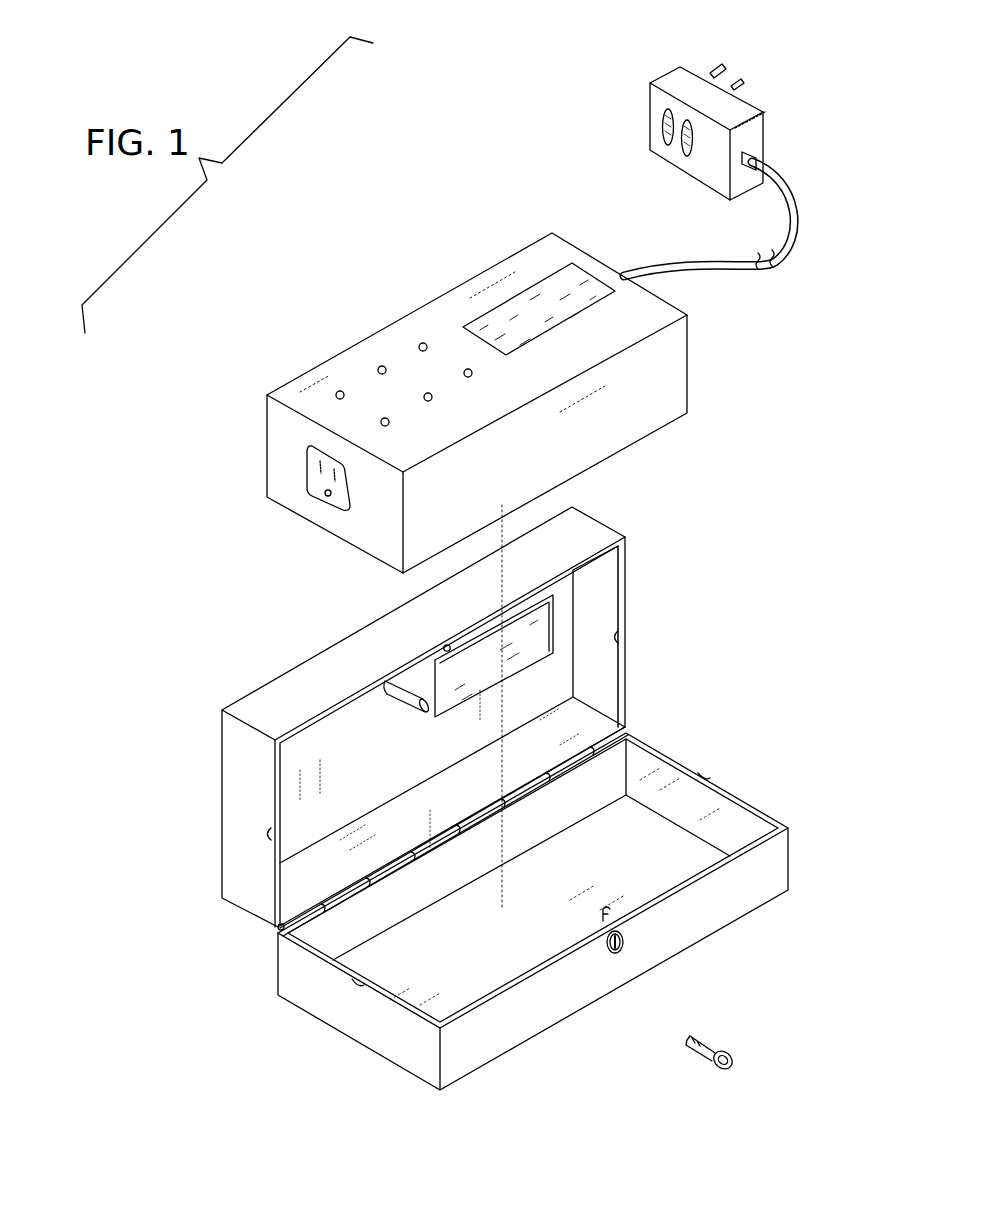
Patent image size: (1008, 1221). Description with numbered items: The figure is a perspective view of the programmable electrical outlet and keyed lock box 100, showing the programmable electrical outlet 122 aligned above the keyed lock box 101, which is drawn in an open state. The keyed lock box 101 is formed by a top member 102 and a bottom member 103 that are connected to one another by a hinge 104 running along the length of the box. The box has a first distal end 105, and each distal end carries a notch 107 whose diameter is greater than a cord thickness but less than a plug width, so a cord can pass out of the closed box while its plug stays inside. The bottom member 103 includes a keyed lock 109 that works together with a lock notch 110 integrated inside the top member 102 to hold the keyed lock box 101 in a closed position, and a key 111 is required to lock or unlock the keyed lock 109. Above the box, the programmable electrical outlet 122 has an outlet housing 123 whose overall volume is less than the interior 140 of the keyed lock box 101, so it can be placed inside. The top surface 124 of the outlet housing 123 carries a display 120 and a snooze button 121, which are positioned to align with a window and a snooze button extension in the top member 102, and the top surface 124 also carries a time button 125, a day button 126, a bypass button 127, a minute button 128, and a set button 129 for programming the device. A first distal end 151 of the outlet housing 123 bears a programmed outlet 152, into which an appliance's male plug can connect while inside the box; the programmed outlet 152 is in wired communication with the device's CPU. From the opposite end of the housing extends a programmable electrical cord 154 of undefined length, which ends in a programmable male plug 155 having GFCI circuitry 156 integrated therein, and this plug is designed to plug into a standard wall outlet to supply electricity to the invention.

The programmable electrical outlet and keyed lock box 100 is at (385, 193).
The keyed lock box 101 is at (135, 1070).
The top member 102 is at (258, 699).
The bottom member 103 is at (487, 1042).
The hinge 104 is at (275, 927).
The first distal end 105 is at (618, 685).
The notch 107 is at (640, 637).
The keyed lock 109 is at (627, 938).
The lock notch 110 is at (444, 648).
The key 111 is at (702, 1050).
The display 120 is at (488, 312).
The snooze button 121 is at (467, 370).
The programmable electrical outlet 122 is at (805, 63).
The outlet housing 123 is at (635, 427).
The top surface 124 is at (523, 260).
The time button 125 is at (337, 392).
The day button 126 is at (380, 368).
The bypass button 127 is at (420, 345).
The minute button 128 is at (385, 427).
The set button 129 is at (433, 397).
The interior 140 is at (680, 838).
The first distal end 151 is at (285, 500).
The programmed outlet 152 is at (305, 462).
The programmable electrical cord 154 is at (678, 266).
The programmable male plug 155 is at (707, 53).
The GFCI circuitry 156 is at (641, 82).